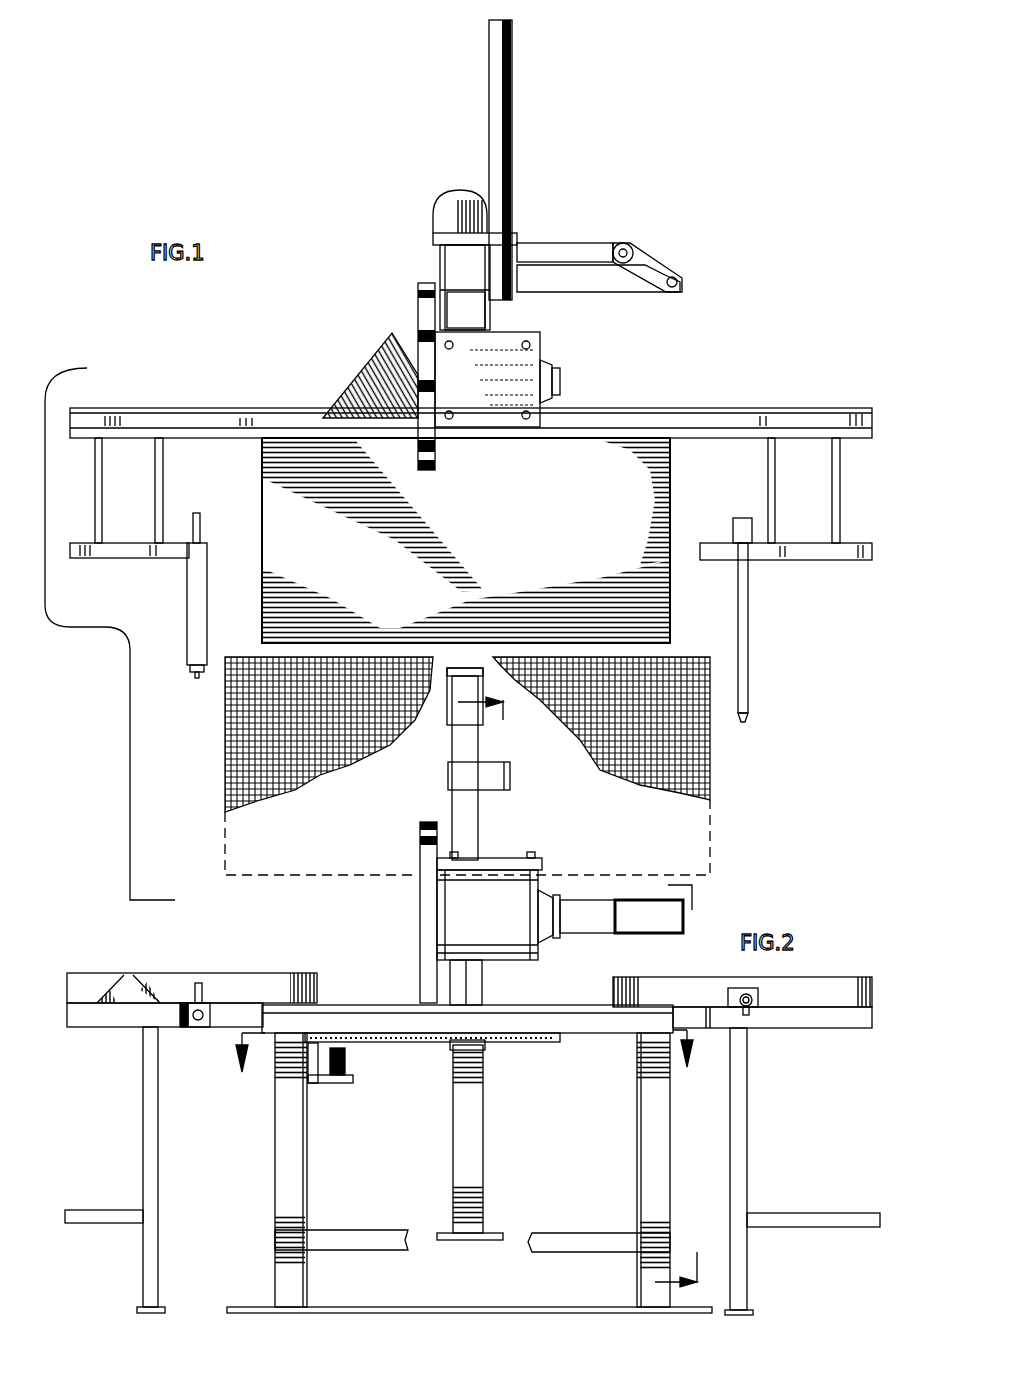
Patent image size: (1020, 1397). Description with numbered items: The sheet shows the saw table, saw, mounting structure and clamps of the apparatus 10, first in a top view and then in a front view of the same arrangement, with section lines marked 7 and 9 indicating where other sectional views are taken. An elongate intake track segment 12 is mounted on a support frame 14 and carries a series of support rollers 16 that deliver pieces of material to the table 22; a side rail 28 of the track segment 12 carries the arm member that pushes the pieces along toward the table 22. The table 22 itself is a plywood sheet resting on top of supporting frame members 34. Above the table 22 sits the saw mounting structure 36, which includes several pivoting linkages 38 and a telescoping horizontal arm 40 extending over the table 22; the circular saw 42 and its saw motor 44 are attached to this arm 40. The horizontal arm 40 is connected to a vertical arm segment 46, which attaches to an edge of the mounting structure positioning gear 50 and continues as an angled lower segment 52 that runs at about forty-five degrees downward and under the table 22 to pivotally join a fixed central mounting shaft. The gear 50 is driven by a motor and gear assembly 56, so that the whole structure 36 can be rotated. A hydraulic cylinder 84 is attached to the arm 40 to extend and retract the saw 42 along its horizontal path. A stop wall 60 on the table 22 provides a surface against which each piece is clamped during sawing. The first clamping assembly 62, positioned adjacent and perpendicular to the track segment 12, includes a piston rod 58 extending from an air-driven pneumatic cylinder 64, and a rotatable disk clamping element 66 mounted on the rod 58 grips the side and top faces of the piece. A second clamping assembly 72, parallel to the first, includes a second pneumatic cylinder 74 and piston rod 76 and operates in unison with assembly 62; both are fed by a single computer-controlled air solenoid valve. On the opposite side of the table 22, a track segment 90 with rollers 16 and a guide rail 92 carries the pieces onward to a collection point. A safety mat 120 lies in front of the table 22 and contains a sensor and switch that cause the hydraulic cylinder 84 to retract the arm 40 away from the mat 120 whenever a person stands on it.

In FIG. 1, the apparatus 10 is at (585, 150).
In FIG. 2, the apparatus 10 is at (372, 905).
In FIG. 1, the intake track segment 12 is at (110, 558).
In FIG. 2, the support frame 14 is at (143, 1138).
In FIG. 1, the support rollers 16 is at (155, 483).
In FIG. 2, the support rollers 16 is at (150, 985).
In FIG. 1, the table 22 is at (478, 545).
In FIG. 2, the table 22 is at (555, 1013).
In FIG. 1, the side rail 28 is at (215, 438).
In FIG. 2, the supporting frame members 34 is at (307, 1148).
In FIG. 1, the saw mounting structure 36 is at (405, 228).
In FIG. 2, the saw mounting structure 36 is at (525, 824).
In FIG. 1, the pivoting linkages 38 is at (573, 243).
In FIG. 1, the telescoping horizontal arm 40 is at (490, 318).
In FIG. 1, the circular saw 42 is at (418, 452).
In FIG. 2, the circular saw 42 is at (420, 965).
In FIG. 1, the saw motor 44 is at (560, 383).
In FIG. 2, the saw motor 44 is at (540, 950).
In FIG. 1, the vertical arm segment 46 is at (435, 262).
In FIG. 2, the vertical arm segment 46 is at (452, 738).
In FIG. 1, the mounting structure positioning gear 50 is at (327, 372).
In FIG. 2, the mounting structure positioning gear 50 is at (520, 1045).
In FIG. 2, the angled lower segment 52 is at (483, 1150).
In FIG. 2, the motor and gear assembly 56 is at (353, 1070).
In FIG. 1, the piston rod 58 is at (201, 528).
In FIG. 1, the stop wall 60 is at (581, 438).
In FIG. 1, the first clamping assembly 62 is at (207, 610).
In FIG. 2, the first clamping assembly 62 is at (183, 1030).
In FIG. 1, the pneumatic cylinder 64 is at (188, 662).
In FIG. 2, the pneumatic cylinder 64 is at (200, 1022).
In FIG. 2, the rotatable disk clamping element 66 is at (203, 990).
In FIG. 1, the second clamping assembly 72 is at (750, 630).
In FIG. 2, the second clamping assembly 72 is at (752, 1012).
In FIG. 1, the second pneumatic cylinder 74 is at (751, 692).
In FIG. 2, the second pneumatic cylinder 74 is at (727, 1000).
In FIG. 1, the piston rod 76 is at (736, 542).
In FIG. 1, the hydraulic cylinder 84 is at (512, 130).
In FIG. 1, the track segment 90 is at (815, 560).
In FIG. 2, the track segment 90 is at (852, 1028).
In FIG. 1, the guide rail 92 is at (723, 438).
In FIG. 2, the guide rail 92 is at (648, 985).
In FIG. 2, the safety mat 120 is at (333, 748).
In FIG. 2, the section line 7- 7 is at (587, 994).
In FIG. 2, the section line 9- 9 is at (463, 1051).